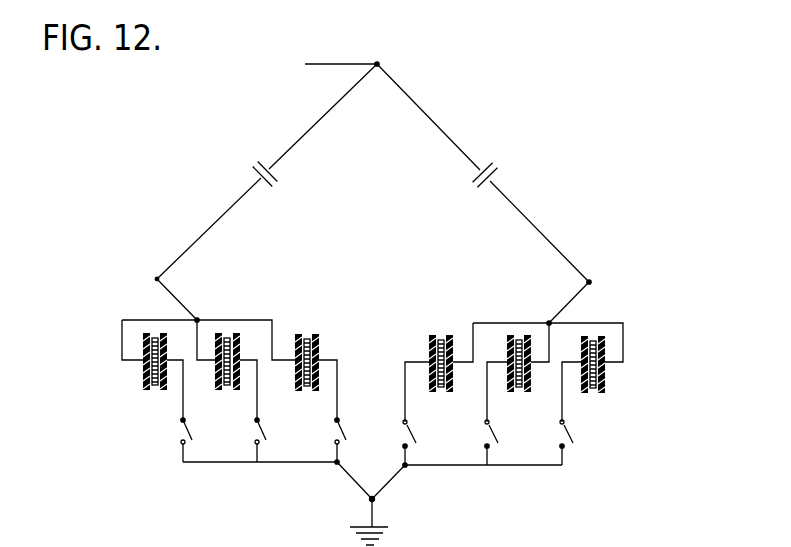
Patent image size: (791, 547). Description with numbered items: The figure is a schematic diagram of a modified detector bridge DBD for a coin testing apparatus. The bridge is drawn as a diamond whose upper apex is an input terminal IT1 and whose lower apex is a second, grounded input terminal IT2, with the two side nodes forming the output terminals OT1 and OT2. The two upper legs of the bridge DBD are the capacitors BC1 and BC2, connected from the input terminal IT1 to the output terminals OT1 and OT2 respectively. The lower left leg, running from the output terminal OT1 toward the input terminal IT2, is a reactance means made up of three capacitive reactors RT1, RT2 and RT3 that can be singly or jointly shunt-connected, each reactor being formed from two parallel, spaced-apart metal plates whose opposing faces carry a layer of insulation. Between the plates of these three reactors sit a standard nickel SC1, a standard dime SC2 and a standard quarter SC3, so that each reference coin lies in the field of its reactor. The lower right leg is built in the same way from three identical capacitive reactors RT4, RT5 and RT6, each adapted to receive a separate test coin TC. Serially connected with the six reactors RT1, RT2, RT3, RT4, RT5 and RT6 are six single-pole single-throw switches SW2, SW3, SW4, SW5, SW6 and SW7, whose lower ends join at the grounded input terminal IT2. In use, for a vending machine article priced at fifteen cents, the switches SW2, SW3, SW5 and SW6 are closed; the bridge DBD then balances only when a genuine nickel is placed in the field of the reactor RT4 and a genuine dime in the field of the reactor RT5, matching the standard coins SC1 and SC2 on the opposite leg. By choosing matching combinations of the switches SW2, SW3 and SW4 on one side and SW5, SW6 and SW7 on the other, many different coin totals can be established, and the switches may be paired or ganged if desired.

The input terminal IT1 is at (380, 62).
The input terminal IT2 is at (374, 499).
The output terminal OT1 is at (159, 281).
The output terminal OT2 is at (585, 283).
The capacitor BC1 is at (283, 177).
The capacitor BC2 is at (470, 181).
The modified detector bridge DBD is at (393, 265).
The standard nickel SC1 is at (152, 332).
The standard dime SC2 is at (227, 333).
The standard quarter SC3 is at (307, 337).
The test coin TC is at (441, 336).
The capacitive reactor RT1 is at (143, 373).
The capacitive reactor RT2 is at (216, 384).
The capacitive reactor RT3 is at (297, 385).
The capacitive reactor RT4 is at (454, 385).
The capacitive reactor RT5 is at (529, 385).
The capacitive reactor RT6 is at (605, 386).
The single-pole single-throw switch SW2 is at (181, 440).
The single-pole single-throw switch SW3 is at (255, 442).
The single-pole single-throw switch SW4 is at (335, 444).
The single-pole single-throw switch SW5 is at (410, 446).
The single-pole single-throw switch SW6 is at (490, 447).
The single-pole single-throw switch SW7 is at (565, 447).